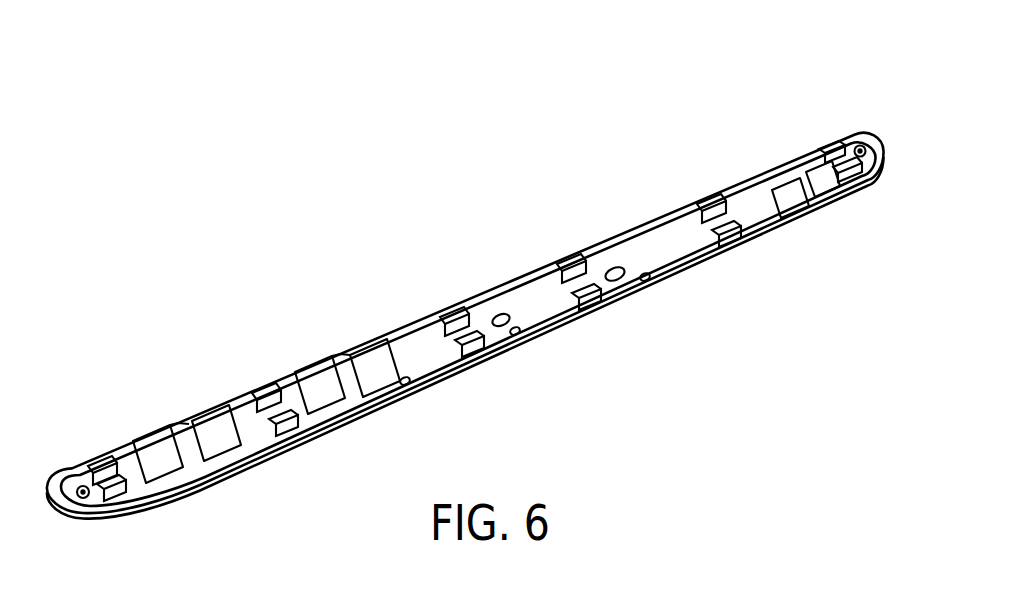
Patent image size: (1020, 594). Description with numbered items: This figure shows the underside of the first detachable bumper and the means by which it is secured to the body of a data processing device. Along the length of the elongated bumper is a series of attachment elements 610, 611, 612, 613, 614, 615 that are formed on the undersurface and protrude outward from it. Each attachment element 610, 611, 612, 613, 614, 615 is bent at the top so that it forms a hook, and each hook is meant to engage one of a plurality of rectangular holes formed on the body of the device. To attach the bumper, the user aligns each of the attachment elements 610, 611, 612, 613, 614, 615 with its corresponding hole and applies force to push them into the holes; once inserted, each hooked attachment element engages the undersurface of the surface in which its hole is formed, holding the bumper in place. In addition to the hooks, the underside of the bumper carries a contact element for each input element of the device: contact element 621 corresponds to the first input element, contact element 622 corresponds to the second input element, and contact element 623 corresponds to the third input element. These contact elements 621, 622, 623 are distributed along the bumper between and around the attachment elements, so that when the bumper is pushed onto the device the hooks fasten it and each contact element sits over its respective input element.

The attachment element 610 is at (121, 476).
The attachment element 611 is at (292, 418).
The attachment element 612 is at (478, 342).
The attachment element 613 is at (593, 292).
The attachment element 614 is at (733, 230).
The attachment element 615 is at (858, 146).
The contact element 621 is at (797, 185).
The contact element 622 is at (193, 457).
The contact element 623 is at (345, 387).